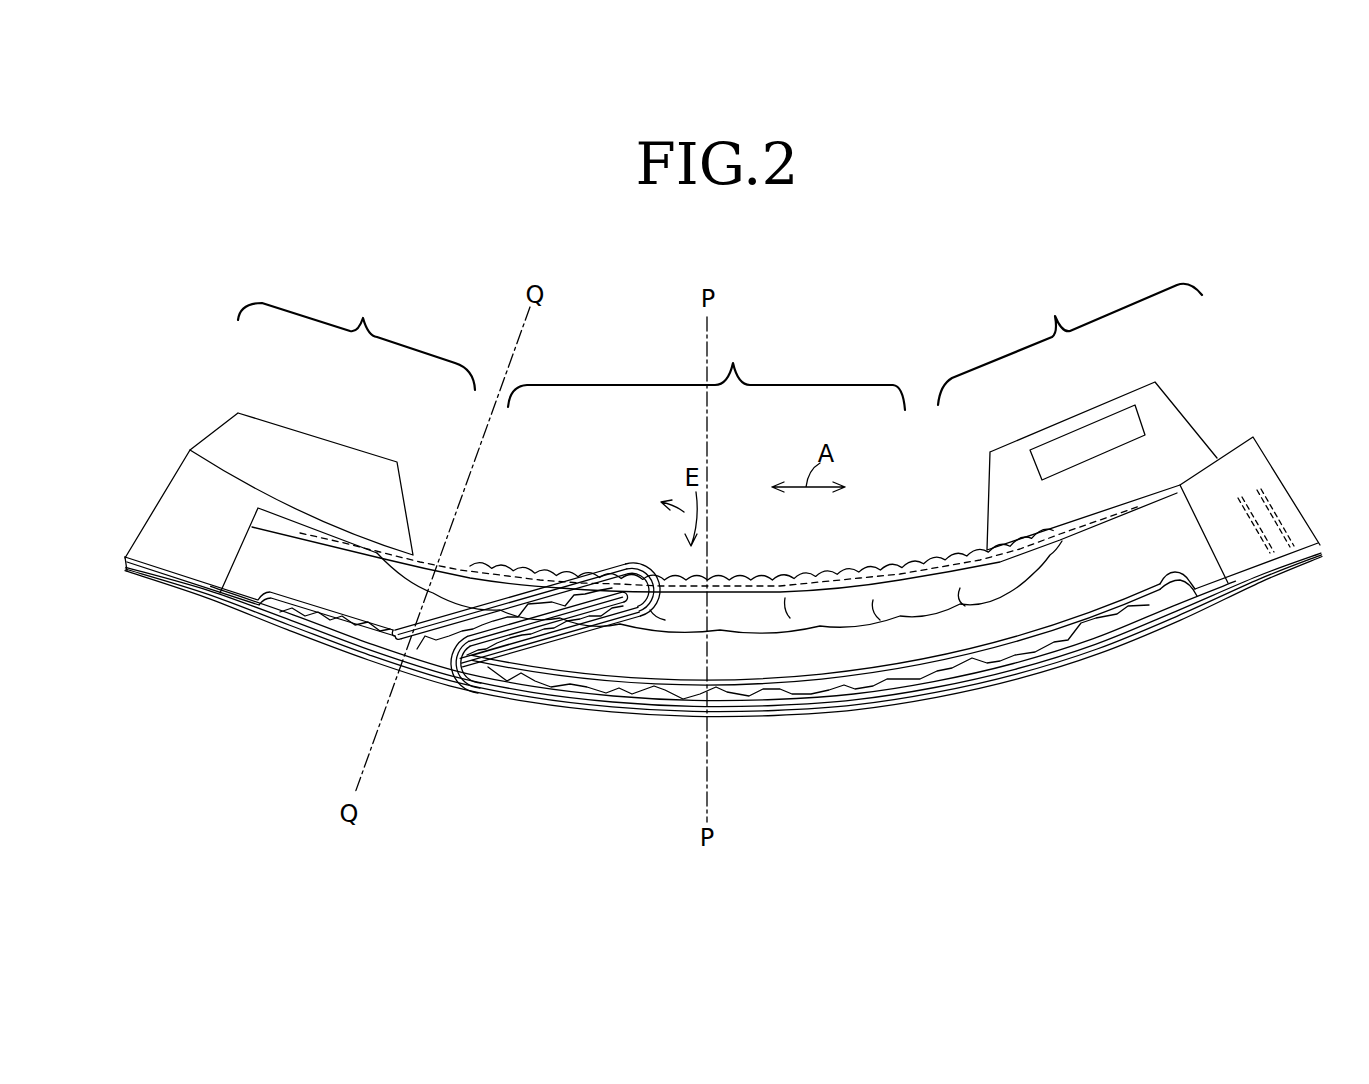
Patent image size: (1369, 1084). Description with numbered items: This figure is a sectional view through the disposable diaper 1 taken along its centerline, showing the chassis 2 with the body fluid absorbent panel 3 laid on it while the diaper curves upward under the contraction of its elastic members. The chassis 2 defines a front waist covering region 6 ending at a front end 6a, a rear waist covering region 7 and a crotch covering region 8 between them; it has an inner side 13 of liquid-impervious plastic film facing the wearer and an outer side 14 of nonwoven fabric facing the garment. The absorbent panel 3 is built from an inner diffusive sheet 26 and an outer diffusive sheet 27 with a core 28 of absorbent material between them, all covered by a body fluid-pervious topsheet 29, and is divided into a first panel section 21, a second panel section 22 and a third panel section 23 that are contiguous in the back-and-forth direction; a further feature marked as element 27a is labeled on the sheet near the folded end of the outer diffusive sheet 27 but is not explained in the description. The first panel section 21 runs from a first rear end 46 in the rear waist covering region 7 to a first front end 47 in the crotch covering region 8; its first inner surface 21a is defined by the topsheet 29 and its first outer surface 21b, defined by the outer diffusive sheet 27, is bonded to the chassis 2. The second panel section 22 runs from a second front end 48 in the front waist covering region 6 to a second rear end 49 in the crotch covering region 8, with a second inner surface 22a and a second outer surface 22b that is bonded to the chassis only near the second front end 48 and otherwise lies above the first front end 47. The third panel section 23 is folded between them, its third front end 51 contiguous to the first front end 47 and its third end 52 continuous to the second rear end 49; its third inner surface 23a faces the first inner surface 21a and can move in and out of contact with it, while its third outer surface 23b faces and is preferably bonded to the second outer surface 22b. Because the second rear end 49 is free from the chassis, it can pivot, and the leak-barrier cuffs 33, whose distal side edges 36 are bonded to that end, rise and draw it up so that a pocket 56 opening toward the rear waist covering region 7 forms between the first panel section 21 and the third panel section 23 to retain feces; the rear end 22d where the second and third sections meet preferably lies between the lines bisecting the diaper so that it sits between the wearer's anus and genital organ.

The disposable diaper 1 is at (1243, 368).
The chassis 2 is at (1318, 527).
The body fluid absorbent panel 3 is at (1134, 593).
The front waist covering region 6 is at (347, 436).
The front end 6a is at (138, 530).
The rear waist covering region 7 is at (1077, 412).
The crotch covering region 8 is at (706, 370).
The inner side 13 is at (160, 523).
The outer side 14 is at (137, 568).
The first panel section 21 is at (882, 672).
The first inner surface 21a is at (965, 653).
The first outer surface 21b is at (950, 697).
The second panel section 22 is at (360, 622).
The second inner surface 22a is at (288, 598).
The second outer surface 22b is at (408, 670).
The rear end 22d is at (650, 578).
The third panel section 23 is at (610, 632).
The third inner surface 23a is at (580, 643).
The third outer surface 23b is at (488, 637).
The inner diffusive sheet 26 is at (788, 688).
The outer diffusive sheet 27 is at (1037, 650).
The core wrap sheet end 27a is at (642, 560).
The core 28 is at (657, 683).
The topsheet 29 is at (1047, 625).
The leak-barrier cuffs 33 is at (914, 563).
The distal side edge 36 is at (812, 602).
The first rear end 46 is at (1150, 610).
The first front end 47 is at (503, 682).
The second front end 48 is at (280, 610).
The second rear end 49 is at (607, 587).
The third front end 51 is at (533, 642).
The third end 52 is at (660, 608).
The pocket 56 is at (703, 628).